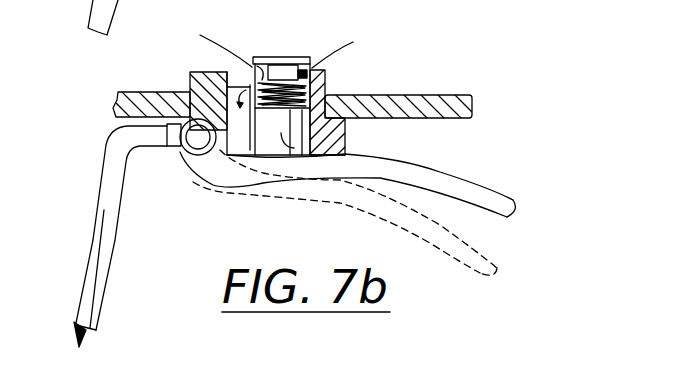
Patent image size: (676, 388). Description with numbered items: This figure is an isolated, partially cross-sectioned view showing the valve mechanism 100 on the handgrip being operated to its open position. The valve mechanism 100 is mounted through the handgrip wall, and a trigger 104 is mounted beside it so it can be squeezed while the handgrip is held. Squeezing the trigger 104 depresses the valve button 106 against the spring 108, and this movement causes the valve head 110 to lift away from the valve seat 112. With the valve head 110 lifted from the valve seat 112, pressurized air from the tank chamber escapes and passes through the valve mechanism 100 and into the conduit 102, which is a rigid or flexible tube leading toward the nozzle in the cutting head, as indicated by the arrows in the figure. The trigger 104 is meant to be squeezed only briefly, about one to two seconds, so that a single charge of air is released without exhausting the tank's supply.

The valve mechanism 100 is at (314, 48).
The conduit 102 is at (115, 227).
The trigger 104 is at (440, 180).
The valve button 106 is at (287, 152).
The spring 108 is at (318, 73).
The valve head 110 is at (257, 58).
The valve seat 112 is at (247, 72).